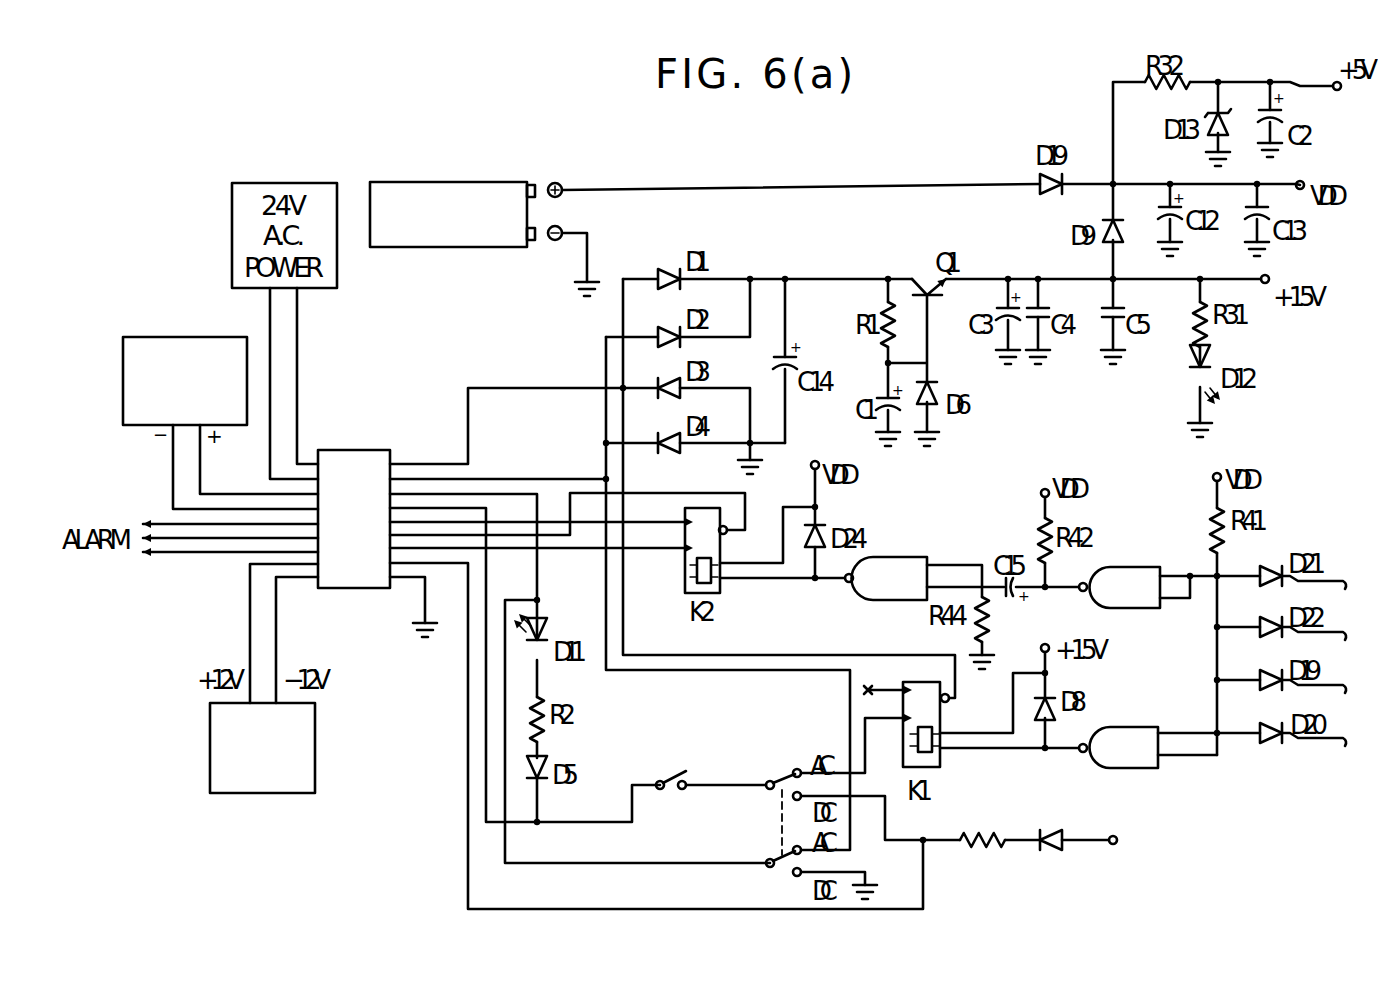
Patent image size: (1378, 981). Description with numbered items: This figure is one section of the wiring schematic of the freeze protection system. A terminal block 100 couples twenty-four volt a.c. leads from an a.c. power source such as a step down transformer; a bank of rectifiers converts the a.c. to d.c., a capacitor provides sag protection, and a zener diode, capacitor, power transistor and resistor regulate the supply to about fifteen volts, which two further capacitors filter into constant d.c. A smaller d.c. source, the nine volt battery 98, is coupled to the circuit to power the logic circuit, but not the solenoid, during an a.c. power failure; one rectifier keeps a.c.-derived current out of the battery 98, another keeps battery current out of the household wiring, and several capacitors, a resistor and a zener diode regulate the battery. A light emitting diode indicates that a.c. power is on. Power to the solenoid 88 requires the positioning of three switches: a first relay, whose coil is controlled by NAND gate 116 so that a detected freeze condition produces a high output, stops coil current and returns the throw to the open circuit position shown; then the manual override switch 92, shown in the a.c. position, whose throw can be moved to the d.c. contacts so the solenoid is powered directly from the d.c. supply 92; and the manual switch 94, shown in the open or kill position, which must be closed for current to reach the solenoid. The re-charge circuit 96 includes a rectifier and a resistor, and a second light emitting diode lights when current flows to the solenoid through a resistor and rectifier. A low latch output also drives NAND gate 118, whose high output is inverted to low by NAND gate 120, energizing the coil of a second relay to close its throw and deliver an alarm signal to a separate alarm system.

The solenoid 88 is at (170, 337).
The battery 98 is at (444, 182).
The terminal block 100 is at (357, 450).
The manual override switch 92 is at (252, 793).
The manual switch 94 is at (664, 766).
The re-charge circuit 96 is at (1024, 873).
The NAND gate 120 is at (900, 557).
The NAND gate 118 is at (1125, 567).
The NAND gate 116 is at (1135, 727).